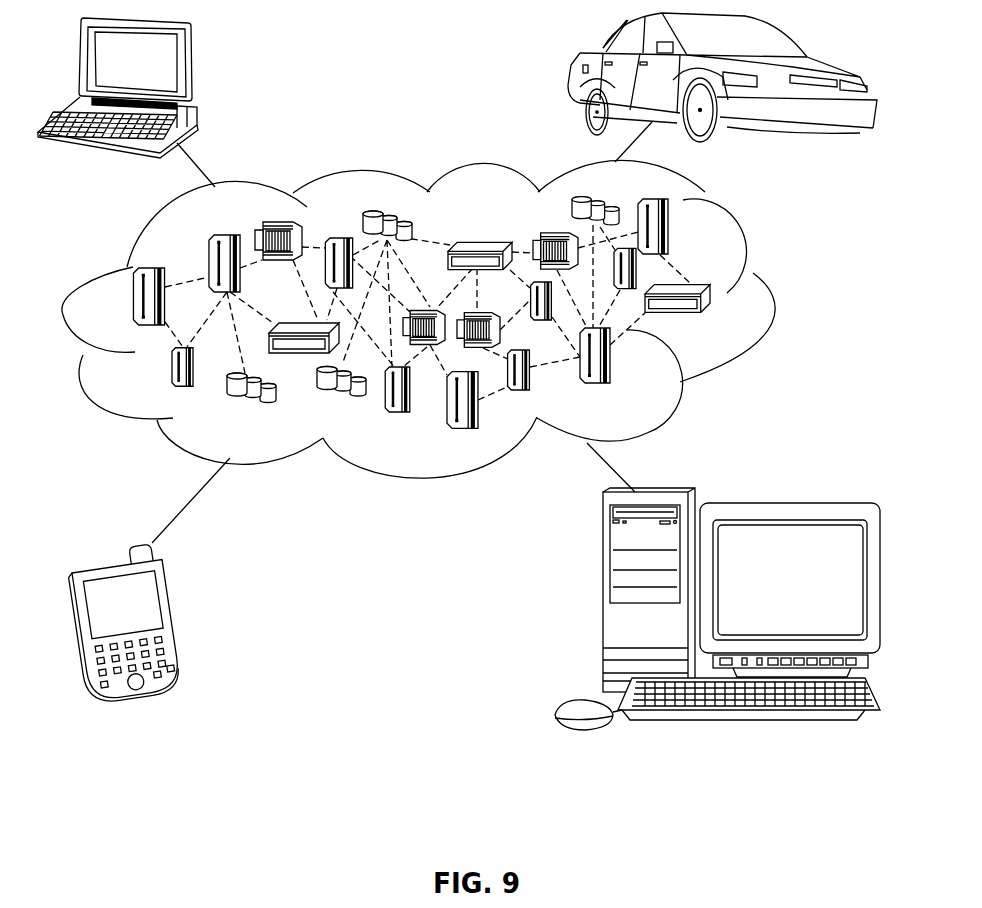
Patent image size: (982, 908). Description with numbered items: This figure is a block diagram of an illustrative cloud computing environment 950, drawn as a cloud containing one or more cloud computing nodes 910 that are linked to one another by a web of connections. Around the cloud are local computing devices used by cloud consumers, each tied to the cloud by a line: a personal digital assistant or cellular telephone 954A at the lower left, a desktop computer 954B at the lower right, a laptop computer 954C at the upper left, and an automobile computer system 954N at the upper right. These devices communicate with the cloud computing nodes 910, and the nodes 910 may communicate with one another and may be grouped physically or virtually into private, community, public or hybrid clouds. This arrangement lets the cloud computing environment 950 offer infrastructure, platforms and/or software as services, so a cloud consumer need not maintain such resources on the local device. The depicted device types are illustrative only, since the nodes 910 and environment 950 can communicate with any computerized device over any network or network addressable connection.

The cloud computing nodes 910 is at (738, 322).
The cloud computing environment 950 is at (757, 262).
The personal digital assistant (PDA) or cellular telephone 954A is at (183, 617).
The desktop computer 954B is at (603, 598).
The laptop computer 954C is at (192, 62).
The automobile computer system 954N is at (577, 70).